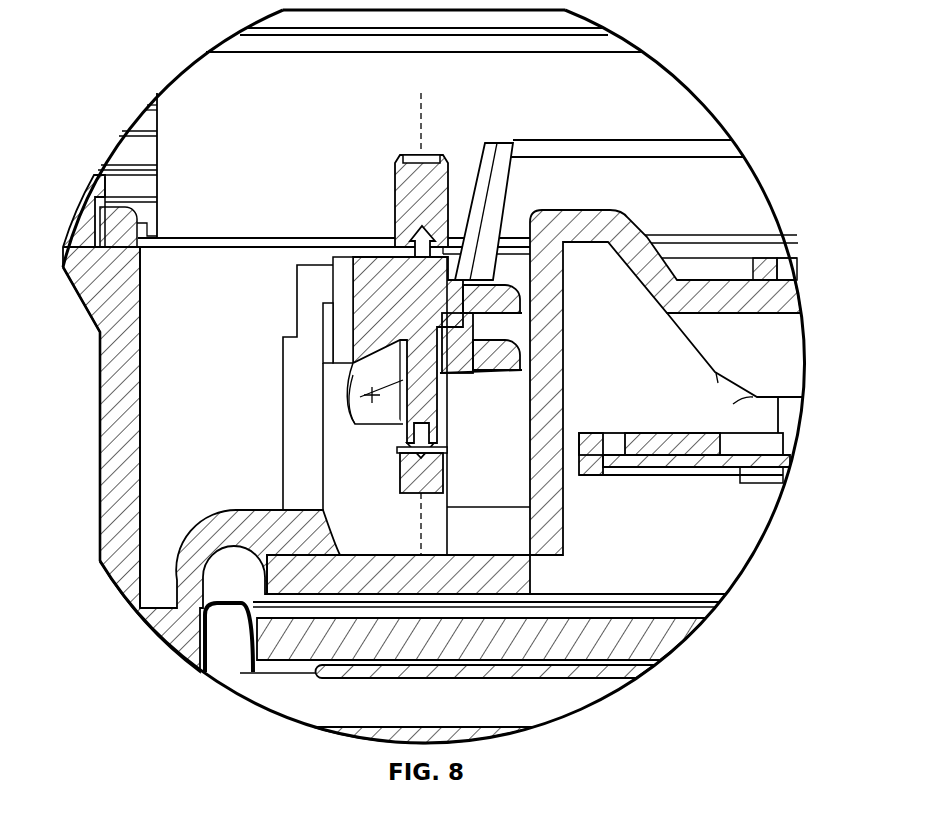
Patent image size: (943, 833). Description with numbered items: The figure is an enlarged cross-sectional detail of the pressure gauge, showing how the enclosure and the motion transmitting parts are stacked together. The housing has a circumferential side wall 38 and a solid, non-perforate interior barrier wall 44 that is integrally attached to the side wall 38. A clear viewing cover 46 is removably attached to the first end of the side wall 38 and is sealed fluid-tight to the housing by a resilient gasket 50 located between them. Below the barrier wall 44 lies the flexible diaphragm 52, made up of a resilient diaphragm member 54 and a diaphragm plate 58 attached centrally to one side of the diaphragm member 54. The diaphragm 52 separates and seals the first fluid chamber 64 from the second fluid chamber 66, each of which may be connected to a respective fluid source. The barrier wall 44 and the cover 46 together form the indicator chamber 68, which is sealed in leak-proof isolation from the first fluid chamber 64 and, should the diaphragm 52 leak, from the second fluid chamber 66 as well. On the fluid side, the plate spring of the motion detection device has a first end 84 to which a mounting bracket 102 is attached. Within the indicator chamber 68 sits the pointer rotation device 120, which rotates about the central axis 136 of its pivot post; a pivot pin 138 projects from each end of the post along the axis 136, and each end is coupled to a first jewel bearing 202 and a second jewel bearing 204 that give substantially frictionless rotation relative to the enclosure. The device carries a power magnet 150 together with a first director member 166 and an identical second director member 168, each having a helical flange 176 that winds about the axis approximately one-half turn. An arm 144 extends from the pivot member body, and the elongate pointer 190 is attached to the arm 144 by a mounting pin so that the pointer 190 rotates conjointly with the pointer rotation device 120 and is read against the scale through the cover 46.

The circumferential side wall 38 is at (110, 447).
The interior barrier wall 44 is at (548, 370).
The viewing cover 46 is at (197, 84).
The resilient gasket 50 is at (112, 230).
The flexible diaphragm 52 is at (700, 625).
The diaphragm member 54 is at (630, 668).
The diaphragm plate 58 is at (653, 643).
The first fluid chamber 64 is at (634, 364).
The second fluid chamber 66 is at (327, 707).
The indicator chamber 68 is at (155, 392).
The first end of plate spring 84 is at (670, 463).
The mounting bracket 102 is at (692, 438).
The pointer rotation device 120 is at (278, 283).
The central axis 136 is at (420, 115).
The pivot pin 138 is at (410, 238).
The arm 144 is at (503, 152).
The power magnet 150 is at (377, 395).
The first director member 166 is at (400, 357).
The second director member 168 is at (403, 412).
The helical flange 176 is at (505, 290).
The pointer 190 is at (627, 152).
The first jewel bearing 202 is at (420, 210).
The second jewel bearing 204 is at (406, 478).